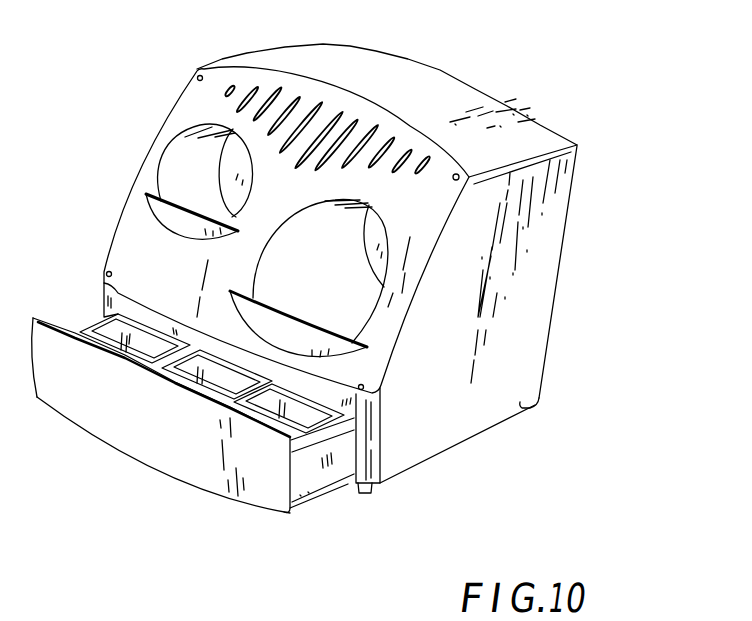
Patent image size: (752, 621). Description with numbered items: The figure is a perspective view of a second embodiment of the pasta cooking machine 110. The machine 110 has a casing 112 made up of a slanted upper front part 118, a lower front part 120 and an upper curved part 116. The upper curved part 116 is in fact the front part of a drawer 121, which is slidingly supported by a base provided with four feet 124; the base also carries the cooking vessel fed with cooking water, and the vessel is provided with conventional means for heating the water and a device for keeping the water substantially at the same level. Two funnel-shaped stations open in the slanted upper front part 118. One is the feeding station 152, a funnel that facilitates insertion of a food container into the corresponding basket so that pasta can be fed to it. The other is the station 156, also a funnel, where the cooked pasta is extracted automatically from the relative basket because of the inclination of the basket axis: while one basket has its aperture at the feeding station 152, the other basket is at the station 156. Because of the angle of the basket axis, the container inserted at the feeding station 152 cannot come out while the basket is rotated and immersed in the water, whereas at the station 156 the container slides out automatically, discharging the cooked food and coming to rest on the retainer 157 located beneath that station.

The pasta cooking machine 110 is at (342, 285).
The casing 112 is at (560, 282).
The upper curved part 116 is at (421, 82).
The slanted upper front part 118 is at (255, 210).
The lower front part 120 is at (193, 434).
The drawer 121 is at (108, 459).
The feet 124 is at (523, 410).
The feeding station 152 is at (183, 155).
The extraction station 156 is at (282, 258).
The retainer 157 is at (316, 349).